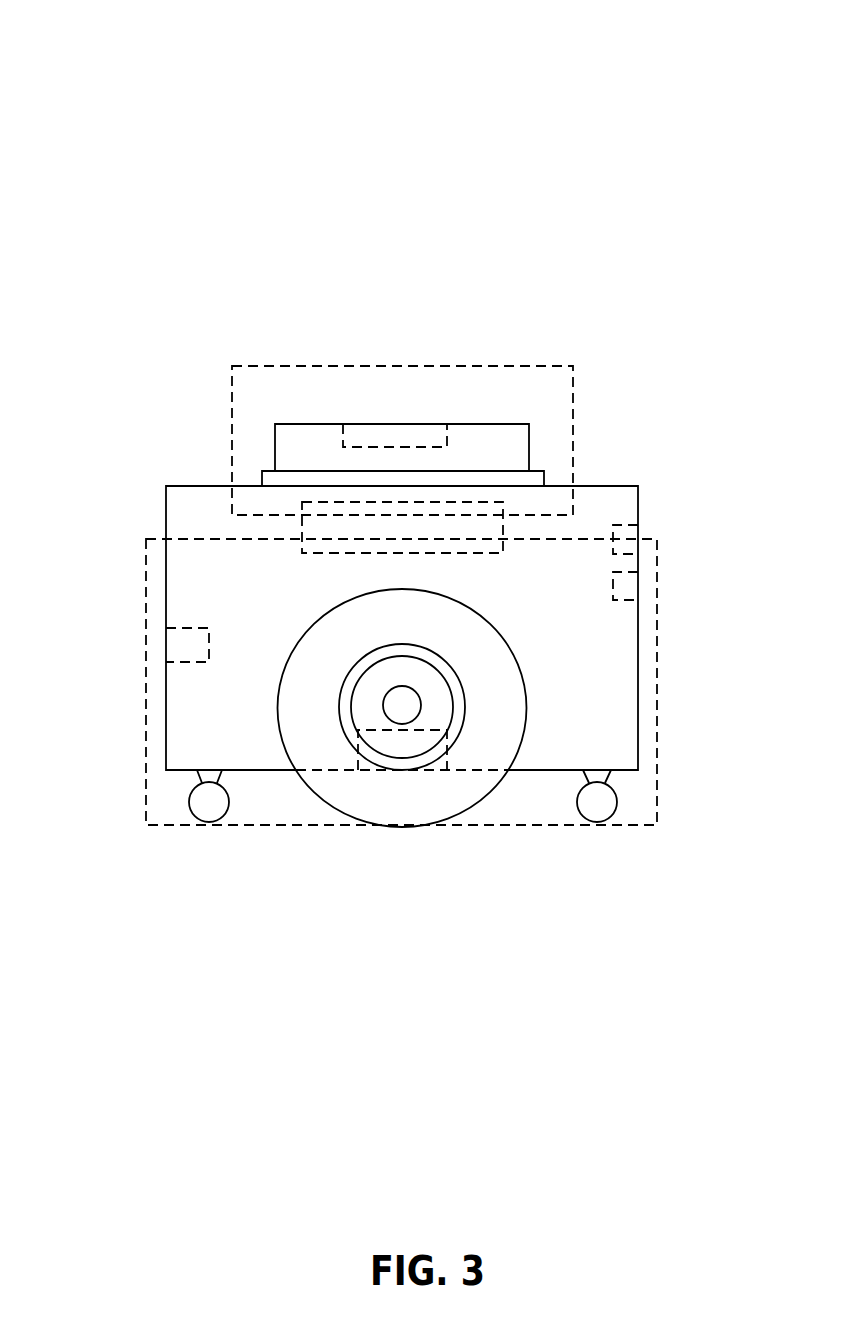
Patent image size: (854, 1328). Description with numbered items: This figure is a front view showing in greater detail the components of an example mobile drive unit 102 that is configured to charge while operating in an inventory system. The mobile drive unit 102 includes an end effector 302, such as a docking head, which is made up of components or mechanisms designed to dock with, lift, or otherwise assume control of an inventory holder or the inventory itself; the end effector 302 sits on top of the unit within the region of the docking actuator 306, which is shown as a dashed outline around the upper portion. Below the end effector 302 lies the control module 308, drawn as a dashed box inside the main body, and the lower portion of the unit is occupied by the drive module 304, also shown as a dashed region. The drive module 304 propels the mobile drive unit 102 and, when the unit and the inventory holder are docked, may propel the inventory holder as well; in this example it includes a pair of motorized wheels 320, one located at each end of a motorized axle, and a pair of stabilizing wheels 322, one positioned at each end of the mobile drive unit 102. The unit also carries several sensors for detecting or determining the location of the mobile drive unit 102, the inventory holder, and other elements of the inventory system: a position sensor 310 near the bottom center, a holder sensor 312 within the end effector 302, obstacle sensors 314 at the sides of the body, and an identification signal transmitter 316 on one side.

The mobile drive unit 102 is at (117, 47).
The end effector 302 is at (478, 424).
The drive module 304 is at (657, 539).
The docking actuator 306 is at (232, 415).
The control module 308 is at (302, 553).
The position sensor 310 is at (447, 767).
The holder sensor 312 is at (343, 438).
The obstacle sensor 314 is at (210, 628).
The identification signal transmitter 316 is at (613, 554).
The motorized wheel 320 is at (278, 733).
The stabilizing wheel 322 is at (209, 822).